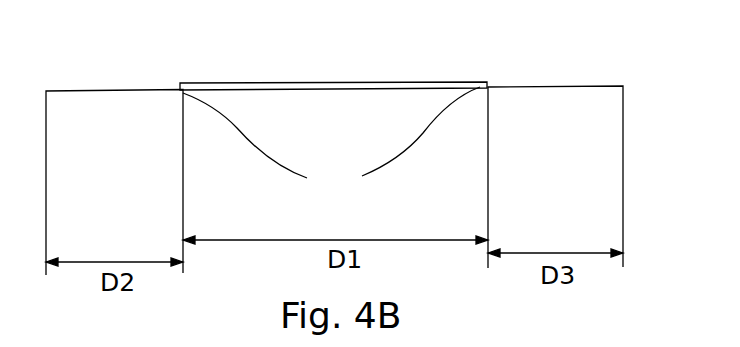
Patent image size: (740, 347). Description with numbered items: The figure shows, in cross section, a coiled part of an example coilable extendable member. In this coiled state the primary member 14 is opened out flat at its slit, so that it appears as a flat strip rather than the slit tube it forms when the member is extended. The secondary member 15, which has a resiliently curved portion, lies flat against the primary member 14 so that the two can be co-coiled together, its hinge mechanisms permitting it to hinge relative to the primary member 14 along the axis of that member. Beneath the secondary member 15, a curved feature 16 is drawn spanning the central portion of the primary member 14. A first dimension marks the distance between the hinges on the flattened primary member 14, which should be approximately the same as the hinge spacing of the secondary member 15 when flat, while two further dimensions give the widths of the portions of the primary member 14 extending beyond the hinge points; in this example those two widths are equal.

The primary member 14 is at (135, 90).
The secondary member 15 is at (450, 81).
The recess 16 is at (331, 142).